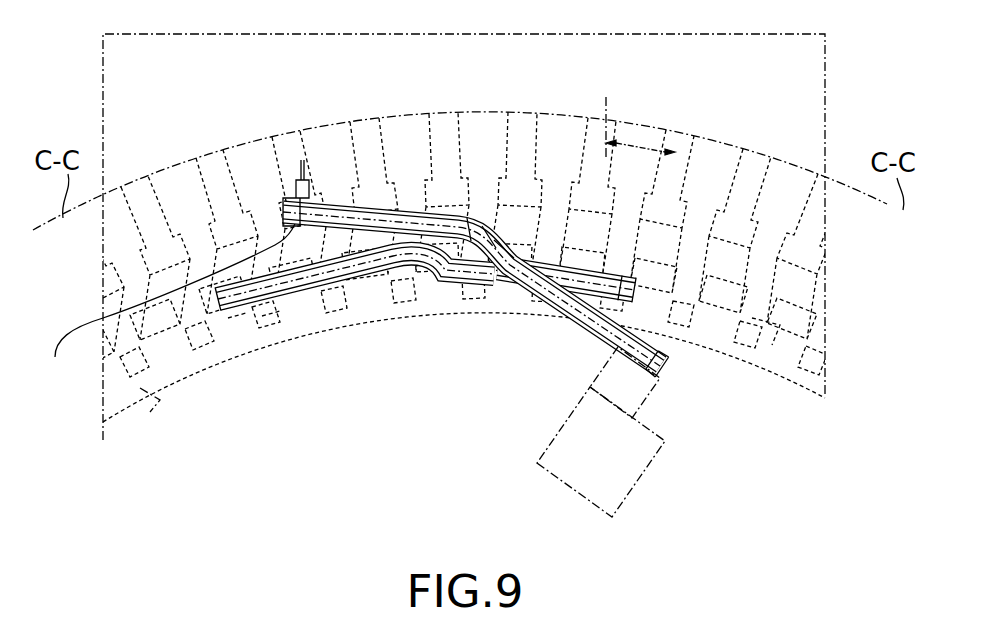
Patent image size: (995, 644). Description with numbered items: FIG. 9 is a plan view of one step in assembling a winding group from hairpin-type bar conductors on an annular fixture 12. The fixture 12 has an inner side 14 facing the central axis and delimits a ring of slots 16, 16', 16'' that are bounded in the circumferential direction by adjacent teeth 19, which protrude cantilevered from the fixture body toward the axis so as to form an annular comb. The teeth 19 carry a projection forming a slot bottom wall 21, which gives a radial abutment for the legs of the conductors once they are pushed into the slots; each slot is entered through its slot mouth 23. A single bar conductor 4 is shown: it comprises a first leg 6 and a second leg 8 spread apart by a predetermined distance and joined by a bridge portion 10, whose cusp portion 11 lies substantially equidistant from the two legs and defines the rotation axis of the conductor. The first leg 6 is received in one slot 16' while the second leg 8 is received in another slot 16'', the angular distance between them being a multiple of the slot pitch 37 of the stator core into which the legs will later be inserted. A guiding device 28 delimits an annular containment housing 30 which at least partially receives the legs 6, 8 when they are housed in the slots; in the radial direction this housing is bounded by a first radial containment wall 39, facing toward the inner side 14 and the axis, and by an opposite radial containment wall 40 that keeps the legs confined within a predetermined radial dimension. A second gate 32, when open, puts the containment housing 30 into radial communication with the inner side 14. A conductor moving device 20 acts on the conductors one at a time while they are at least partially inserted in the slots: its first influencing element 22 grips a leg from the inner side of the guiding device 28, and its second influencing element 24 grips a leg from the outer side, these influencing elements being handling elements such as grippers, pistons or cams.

The bar conductor 4 is at (357, 200).
The first leg 6 is at (174, 300).
The second leg 8 is at (672, 347).
The bridge portion 10 is at (425, 272).
The cusp portion 11 is at (480, 222).
The annular fixture 12 is at (587, 93).
The inner side 14 is at (507, 341).
The slot 16 is at (238, 202).
The slot 16' is at (329, 178).
The slot 16'' is at (785, 214).
The teeth 19 is at (270, 320).
The conductor moving device 20 is at (603, 457).
The slot bottom wall 21 is at (206, 166).
The first influencing element 22 is at (655, 408).
The slot mouth 23 is at (240, 322).
The second influencing element 24 is at (288, 152).
The guiding device 28 is at (147, 398).
The annular containment housing 30 is at (768, 302).
The second gate 32 is at (676, 306).
The slot pitch 37 is at (623, 123).
The first radial containment wall 39 is at (694, 277).
The radial containment wall 40 is at (765, 322).